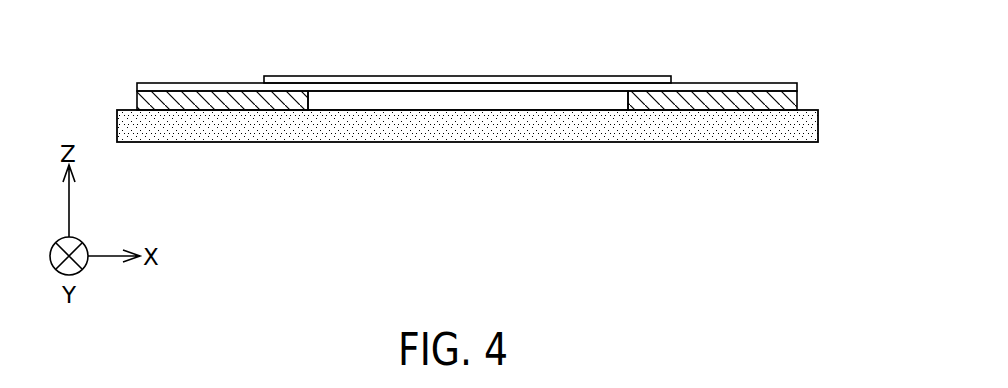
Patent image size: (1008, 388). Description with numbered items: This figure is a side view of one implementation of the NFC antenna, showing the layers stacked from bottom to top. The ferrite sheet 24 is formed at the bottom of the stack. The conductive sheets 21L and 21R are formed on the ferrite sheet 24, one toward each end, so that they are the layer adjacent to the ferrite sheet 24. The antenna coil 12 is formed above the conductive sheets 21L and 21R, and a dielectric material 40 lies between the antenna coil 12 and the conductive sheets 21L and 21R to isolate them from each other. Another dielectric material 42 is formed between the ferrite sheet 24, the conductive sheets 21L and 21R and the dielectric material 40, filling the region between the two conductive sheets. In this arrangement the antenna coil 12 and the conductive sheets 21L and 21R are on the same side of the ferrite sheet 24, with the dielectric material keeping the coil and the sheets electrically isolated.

The antenna coil 12 is at (500, 76).
The conductive sheet 21L is at (212, 95).
The conductive sheet 21R is at (718, 97).
The ferrite sheet 24 is at (810, 128).
The dielectric material 40 is at (778, 83).
The dielectric material 42 is at (597, 98).